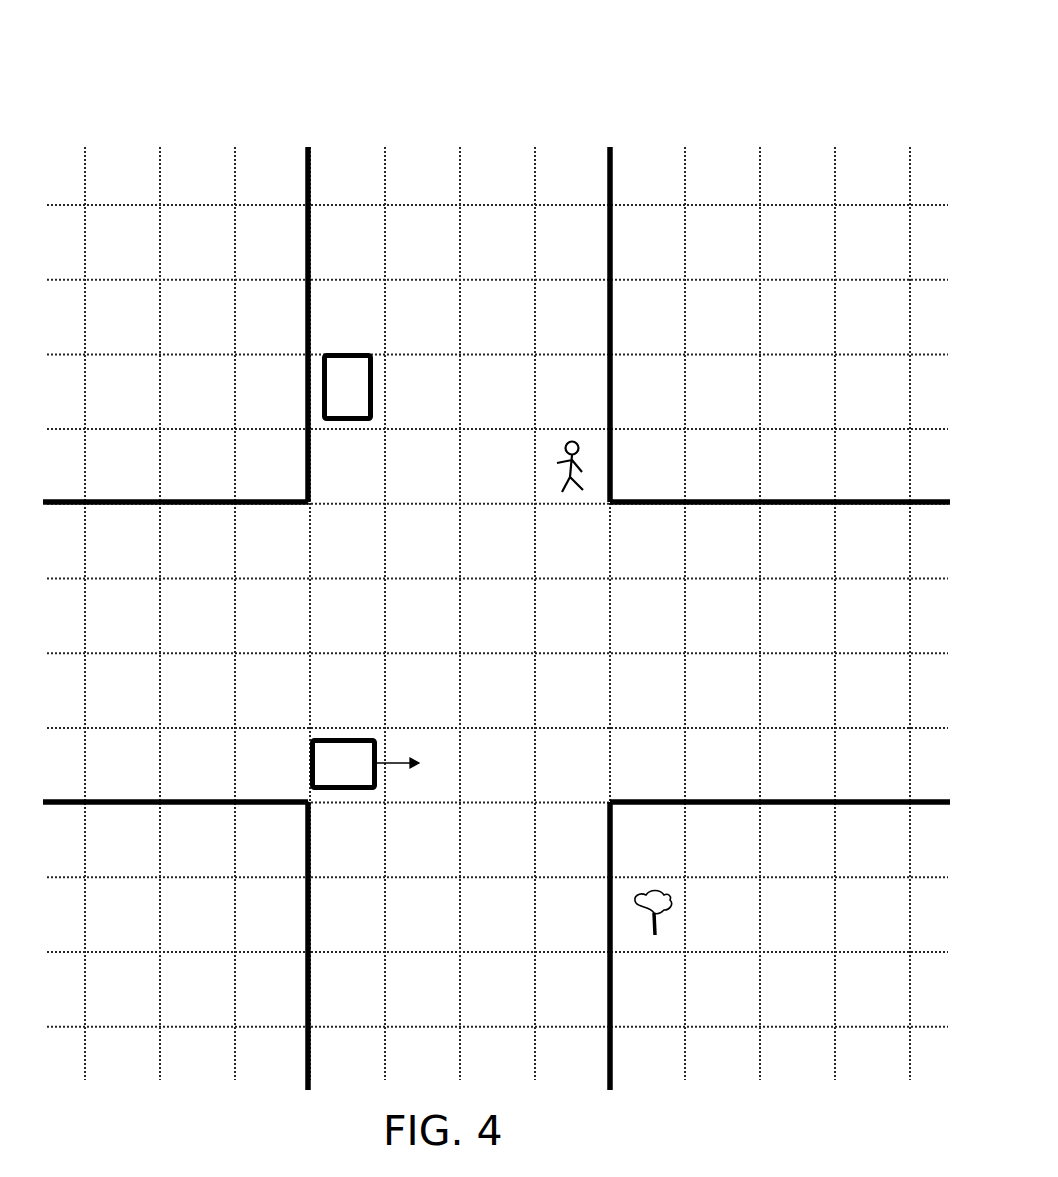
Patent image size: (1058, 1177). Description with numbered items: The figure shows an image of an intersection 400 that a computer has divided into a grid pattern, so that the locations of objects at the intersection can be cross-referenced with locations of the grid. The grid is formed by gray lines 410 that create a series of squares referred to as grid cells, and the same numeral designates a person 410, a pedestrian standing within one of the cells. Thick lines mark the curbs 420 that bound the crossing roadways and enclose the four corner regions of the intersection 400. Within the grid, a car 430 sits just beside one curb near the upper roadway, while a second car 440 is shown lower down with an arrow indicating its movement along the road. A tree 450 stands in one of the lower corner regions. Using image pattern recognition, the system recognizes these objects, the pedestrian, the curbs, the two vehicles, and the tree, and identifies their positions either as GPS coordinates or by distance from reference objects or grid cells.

The intersection 400 is at (496, 553).
The person 410 is at (457, 175).
The curbs 420 is at (307, 464).
The car 430 is at (348, 387).
The car 440 is at (366, 764).
The tree 450 is at (660, 915).